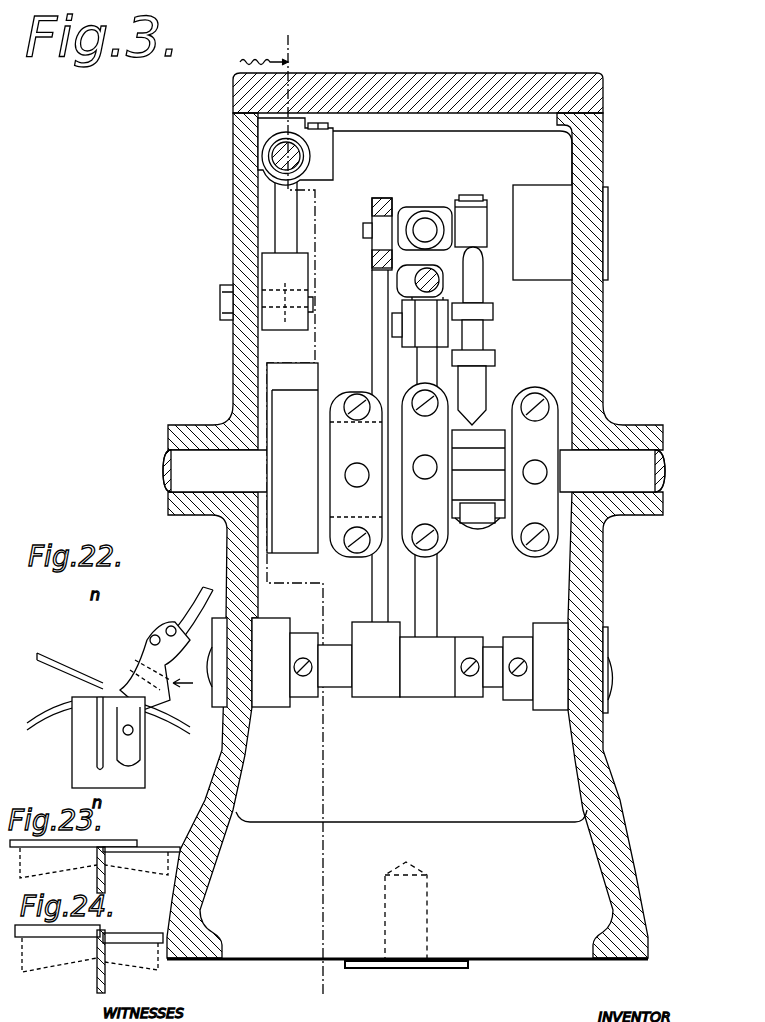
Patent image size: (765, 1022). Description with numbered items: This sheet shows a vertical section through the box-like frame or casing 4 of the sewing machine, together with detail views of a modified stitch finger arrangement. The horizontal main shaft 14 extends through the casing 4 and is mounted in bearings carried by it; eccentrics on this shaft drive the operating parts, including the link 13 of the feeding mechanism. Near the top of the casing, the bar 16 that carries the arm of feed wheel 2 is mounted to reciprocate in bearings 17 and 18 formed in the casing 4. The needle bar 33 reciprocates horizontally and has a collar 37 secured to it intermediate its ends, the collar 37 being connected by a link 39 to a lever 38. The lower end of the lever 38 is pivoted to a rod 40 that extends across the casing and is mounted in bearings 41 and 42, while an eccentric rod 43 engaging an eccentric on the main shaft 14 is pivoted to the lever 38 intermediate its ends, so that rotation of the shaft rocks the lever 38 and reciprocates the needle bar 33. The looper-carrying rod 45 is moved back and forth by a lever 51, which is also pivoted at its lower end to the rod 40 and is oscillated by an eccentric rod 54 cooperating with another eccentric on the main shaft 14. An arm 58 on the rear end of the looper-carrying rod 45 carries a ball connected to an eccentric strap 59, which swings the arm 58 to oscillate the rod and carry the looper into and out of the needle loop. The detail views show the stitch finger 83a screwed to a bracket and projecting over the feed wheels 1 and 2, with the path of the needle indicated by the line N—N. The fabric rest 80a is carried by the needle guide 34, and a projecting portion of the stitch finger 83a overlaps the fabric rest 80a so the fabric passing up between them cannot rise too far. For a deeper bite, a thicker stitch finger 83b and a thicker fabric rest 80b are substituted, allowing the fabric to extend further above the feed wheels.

In FIG. 3, the feed wheel 1 is at (295, 516).
In FIG. 22, the feed wheel 1 is at (40, 660).
In FIG. 22, the feed wheel 2 is at (40, 712).
In FIG. 3, the framework 4 is at (237, 373).
In FIG. 3, the link 13 is at (505, 472).
In FIG. 3, the main shaft 14 is at (178, 470).
In FIG. 3, the bar 16 is at (270, 155).
In FIG. 3, the bearing 17 is at (262, 192).
In FIG. 22, the bearing 18 is at (200, 605).
In FIG. 3, the needle bar 33 is at (420, 282).
In FIG. 22, the needle guide 34 is at (130, 778).
In FIG. 3, the collar 37 is at (412, 272).
In FIG. 3, the lever 38 is at (425, 362).
In FIG. 3, the link 39 is at (405, 325).
In FIG. 3, the rod 40 is at (335, 680).
In FIG. 3, the bearing 41 is at (276, 698).
In FIG. 3, the bearing 42 is at (545, 700).
In FIG. 3, the eccentric rod 43 is at (425, 470).
In FIG. 3, the looper-carrying rod 45 is at (402, 215).
In FIG. 3, the lever 51 is at (370, 262).
In FIG. 3, the eccentric rod 54 is at (356, 474).
In FIG. 3, the arm 58 is at (430, 222).
In FIG. 3, the eccentric strap 59 is at (478, 328).
In FIG. 22, the fabric rest 80a is at (130, 745).
In FIG. 23, the fabric rest 80a is at (147, 847).
In FIG. 24, the fabric rest 80b is at (135, 933).
In FIG. 22, the stitch finger 83a is at (137, 668).
In FIG. 23, the stitch finger 83a is at (94, 863).
In FIG. 24, the stitch finger 83b is at (65, 933).